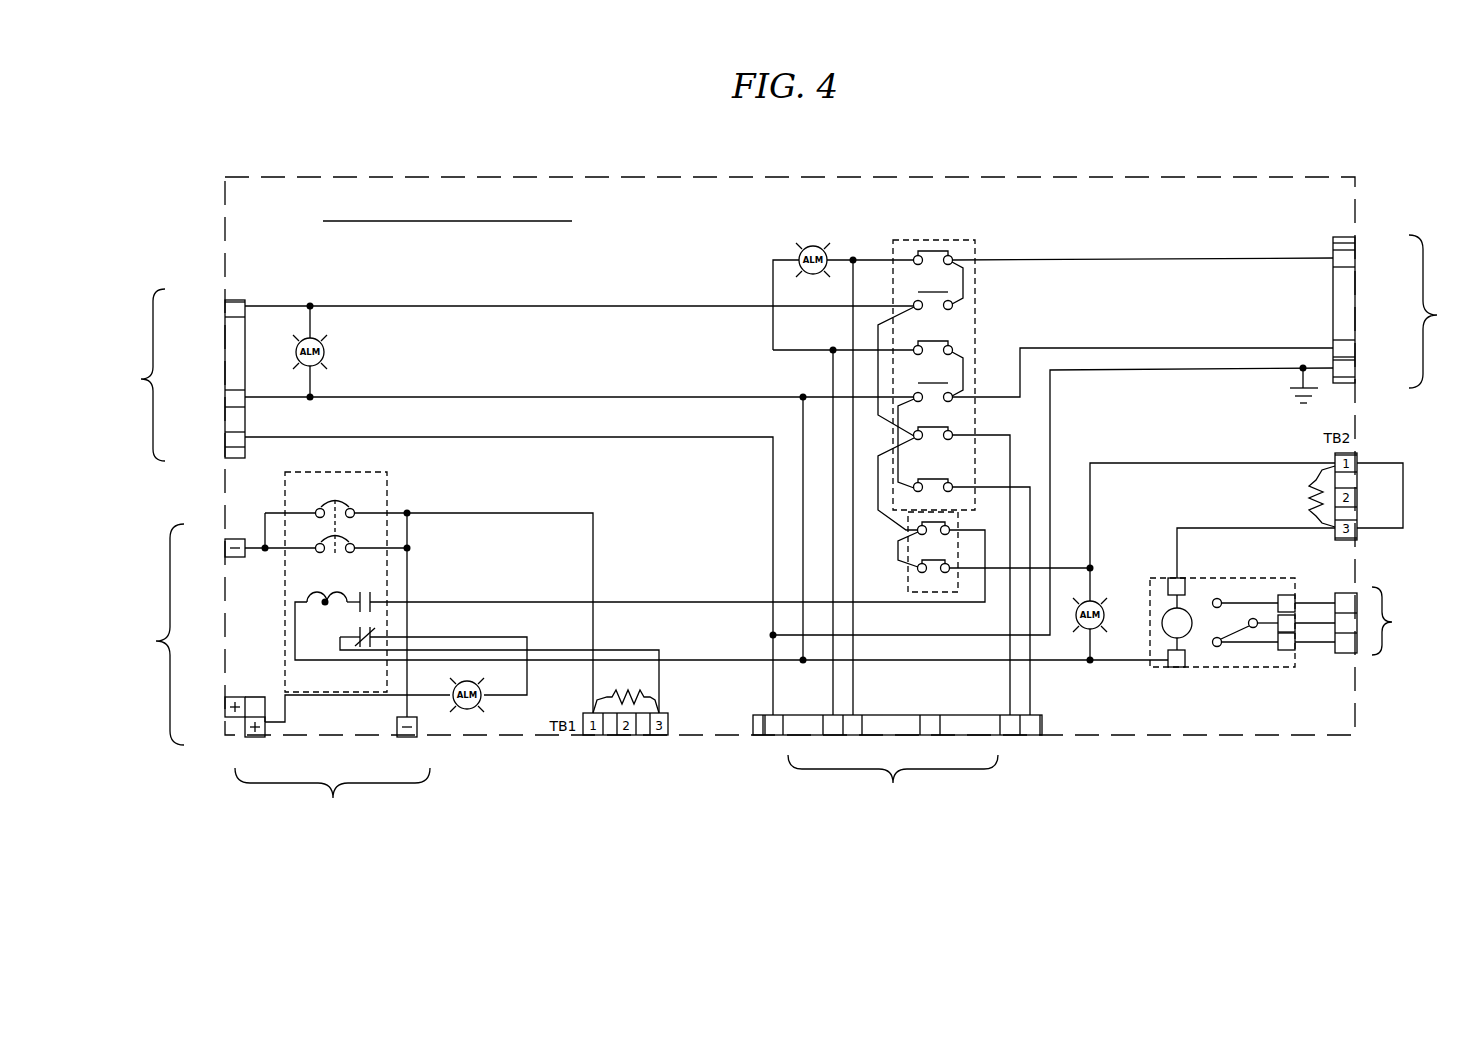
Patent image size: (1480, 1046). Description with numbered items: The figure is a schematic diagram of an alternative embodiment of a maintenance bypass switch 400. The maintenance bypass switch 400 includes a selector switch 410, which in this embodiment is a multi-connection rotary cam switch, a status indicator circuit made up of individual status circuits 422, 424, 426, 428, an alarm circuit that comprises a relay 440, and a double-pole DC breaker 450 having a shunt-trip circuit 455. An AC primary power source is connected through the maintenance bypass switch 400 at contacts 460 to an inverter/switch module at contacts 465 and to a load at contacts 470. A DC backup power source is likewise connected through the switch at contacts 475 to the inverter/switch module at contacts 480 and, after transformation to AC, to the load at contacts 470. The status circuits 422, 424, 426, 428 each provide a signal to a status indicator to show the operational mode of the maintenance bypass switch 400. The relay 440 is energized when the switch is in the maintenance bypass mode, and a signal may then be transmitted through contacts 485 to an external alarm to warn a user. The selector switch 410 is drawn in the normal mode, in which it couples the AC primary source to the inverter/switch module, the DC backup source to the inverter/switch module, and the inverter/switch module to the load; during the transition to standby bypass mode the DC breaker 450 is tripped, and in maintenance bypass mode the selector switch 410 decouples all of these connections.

The maintenance bypass switch 400 is at (663, 205).
The selector switch 410 is at (966, 318).
The status circuit 422 is at (328, 352).
The status circuit 424 is at (800, 252).
The status circuit 426 is at (484, 708).
The status circuit 428 is at (1099, 601).
The relay 440 is at (1215, 650).
The double-pole DC breaker 450 is at (358, 503).
The shunt-trip circuit 455 is at (337, 582).
The contacts 460 is at (195, 357).
The contacts 465 is at (873, 752).
The contacts 470 is at (1381, 288).
The contacts 475 is at (188, 634).
The contacts 480 is at (332, 775).
The contacts 485 is at (1375, 613).